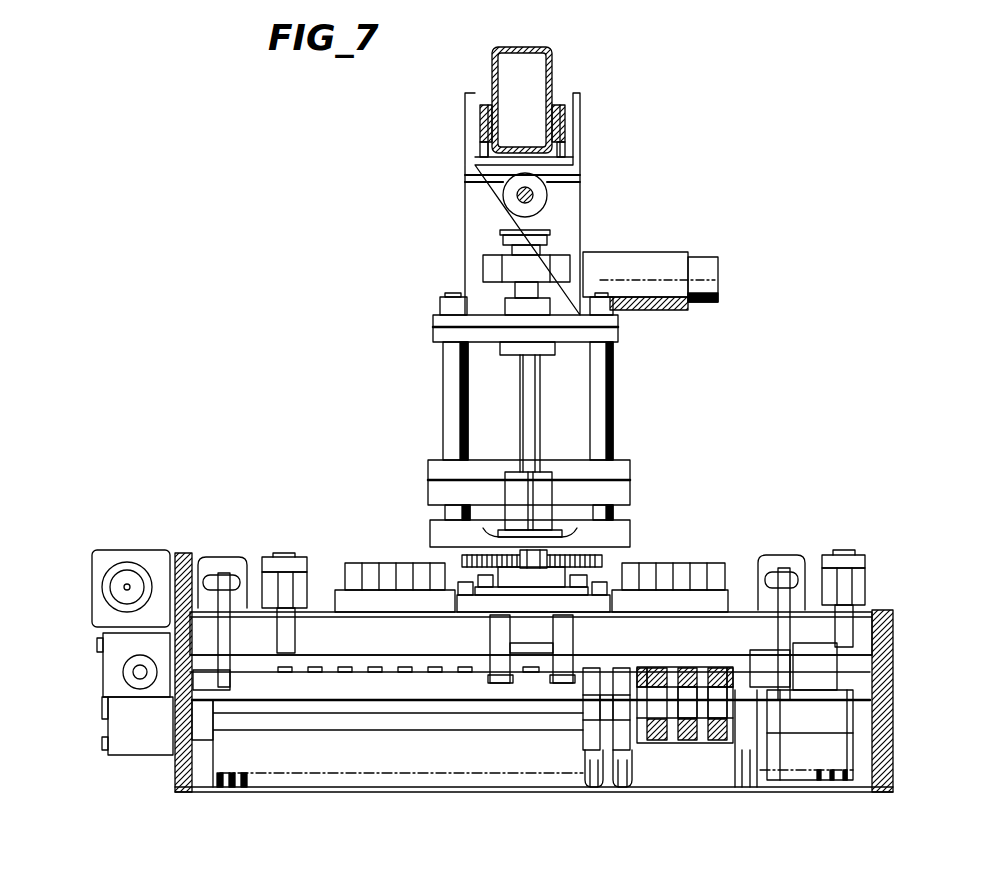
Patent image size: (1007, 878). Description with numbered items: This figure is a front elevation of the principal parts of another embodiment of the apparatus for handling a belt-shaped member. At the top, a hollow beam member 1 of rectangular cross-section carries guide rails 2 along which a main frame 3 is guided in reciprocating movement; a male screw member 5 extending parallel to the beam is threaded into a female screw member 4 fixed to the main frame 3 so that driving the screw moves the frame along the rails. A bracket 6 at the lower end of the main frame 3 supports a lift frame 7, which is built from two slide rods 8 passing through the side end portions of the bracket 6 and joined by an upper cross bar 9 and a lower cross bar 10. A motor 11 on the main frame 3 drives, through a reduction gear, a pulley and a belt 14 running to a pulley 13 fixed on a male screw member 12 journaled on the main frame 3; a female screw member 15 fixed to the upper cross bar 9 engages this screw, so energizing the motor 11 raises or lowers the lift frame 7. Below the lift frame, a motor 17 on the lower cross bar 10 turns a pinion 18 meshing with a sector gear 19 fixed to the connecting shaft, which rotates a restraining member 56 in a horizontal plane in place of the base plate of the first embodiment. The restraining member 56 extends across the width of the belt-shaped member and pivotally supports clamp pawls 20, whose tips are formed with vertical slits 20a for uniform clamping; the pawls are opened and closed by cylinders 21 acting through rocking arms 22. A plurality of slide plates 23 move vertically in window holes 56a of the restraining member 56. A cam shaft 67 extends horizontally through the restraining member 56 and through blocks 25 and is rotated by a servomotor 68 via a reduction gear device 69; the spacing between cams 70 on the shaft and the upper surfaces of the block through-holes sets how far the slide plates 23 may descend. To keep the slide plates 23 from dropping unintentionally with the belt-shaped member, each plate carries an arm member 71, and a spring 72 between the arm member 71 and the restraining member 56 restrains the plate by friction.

The beam member 1 is at (548, 53).
The guide rails 2 is at (480, 127).
The main frame 3 is at (592, 153).
The female screw member 4 is at (500, 183).
The male screw member 5 is at (533, 194).
The bracket 6 is at (630, 472).
The lift frame 7 is at (637, 373).
The slide rods 8 is at (443, 375).
The upper cross bar 9 is at (433, 325).
The lower cross bar 10 is at (430, 530).
The motor 11 is at (650, 252).
The male screw member 12 is at (520, 400).
The pulley 13 is at (513, 230).
The belt 14 is at (503, 238).
The female screw member 15 is at (503, 300).
The motor 17 is at (505, 490).
The pinion 18 is at (577, 533).
The sector gear 19 is at (462, 560).
The clamp pawls 20 is at (310, 775).
The slits 20a is at (244, 787).
The cylinders 21 is at (282, 557).
The rocking arms 22 is at (213, 603).
The slide plates 23 is at (628, 748).
The blocks 25 is at (680, 743).
The restraining member 56 is at (317, 623).
The window holes 56a is at (708, 743).
The cam shaft 67 is at (717, 743).
The servomotor 68 is at (103, 552).
The reduction gear device 69 is at (117, 707).
The cams 70 is at (707, 693).
The arm member 71 is at (587, 697).
The spring 72 is at (597, 717).